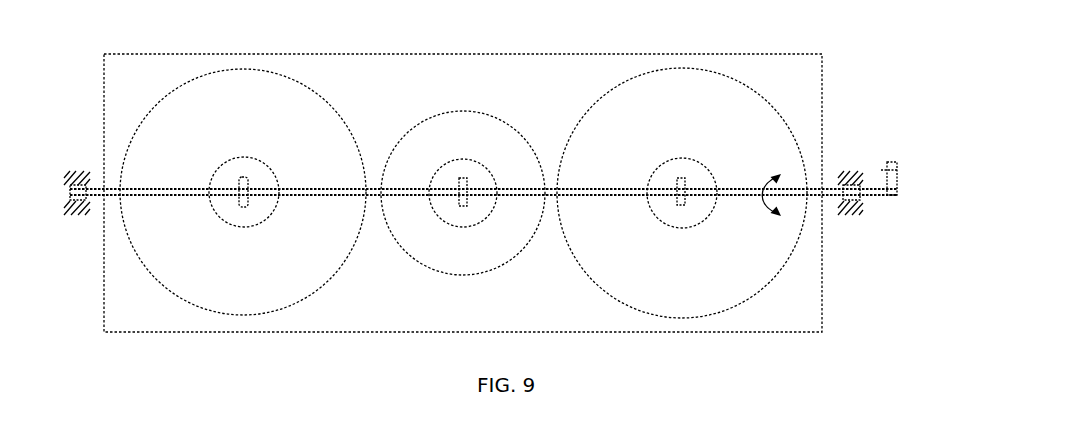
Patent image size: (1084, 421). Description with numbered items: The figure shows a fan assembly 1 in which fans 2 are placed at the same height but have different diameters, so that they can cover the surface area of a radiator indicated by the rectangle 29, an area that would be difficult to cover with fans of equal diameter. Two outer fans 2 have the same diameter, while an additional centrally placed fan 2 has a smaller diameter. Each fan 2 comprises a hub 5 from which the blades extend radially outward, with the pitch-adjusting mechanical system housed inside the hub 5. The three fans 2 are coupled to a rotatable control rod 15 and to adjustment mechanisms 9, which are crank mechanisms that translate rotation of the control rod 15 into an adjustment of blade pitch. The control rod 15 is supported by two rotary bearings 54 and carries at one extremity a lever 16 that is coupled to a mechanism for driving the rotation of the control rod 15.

The flywheel energy storage device 1 is at (97, 67).
The fan 2 is at (207, 112).
The hub 5 is at (248, 173).
The adjustment mechanism 9 is at (243, 205).
The control rod 15 is at (813, 191).
The lever 16 is at (893, 180).
The rectangle 29 is at (800, 54).
The rotary bearing 54 is at (72, 188).